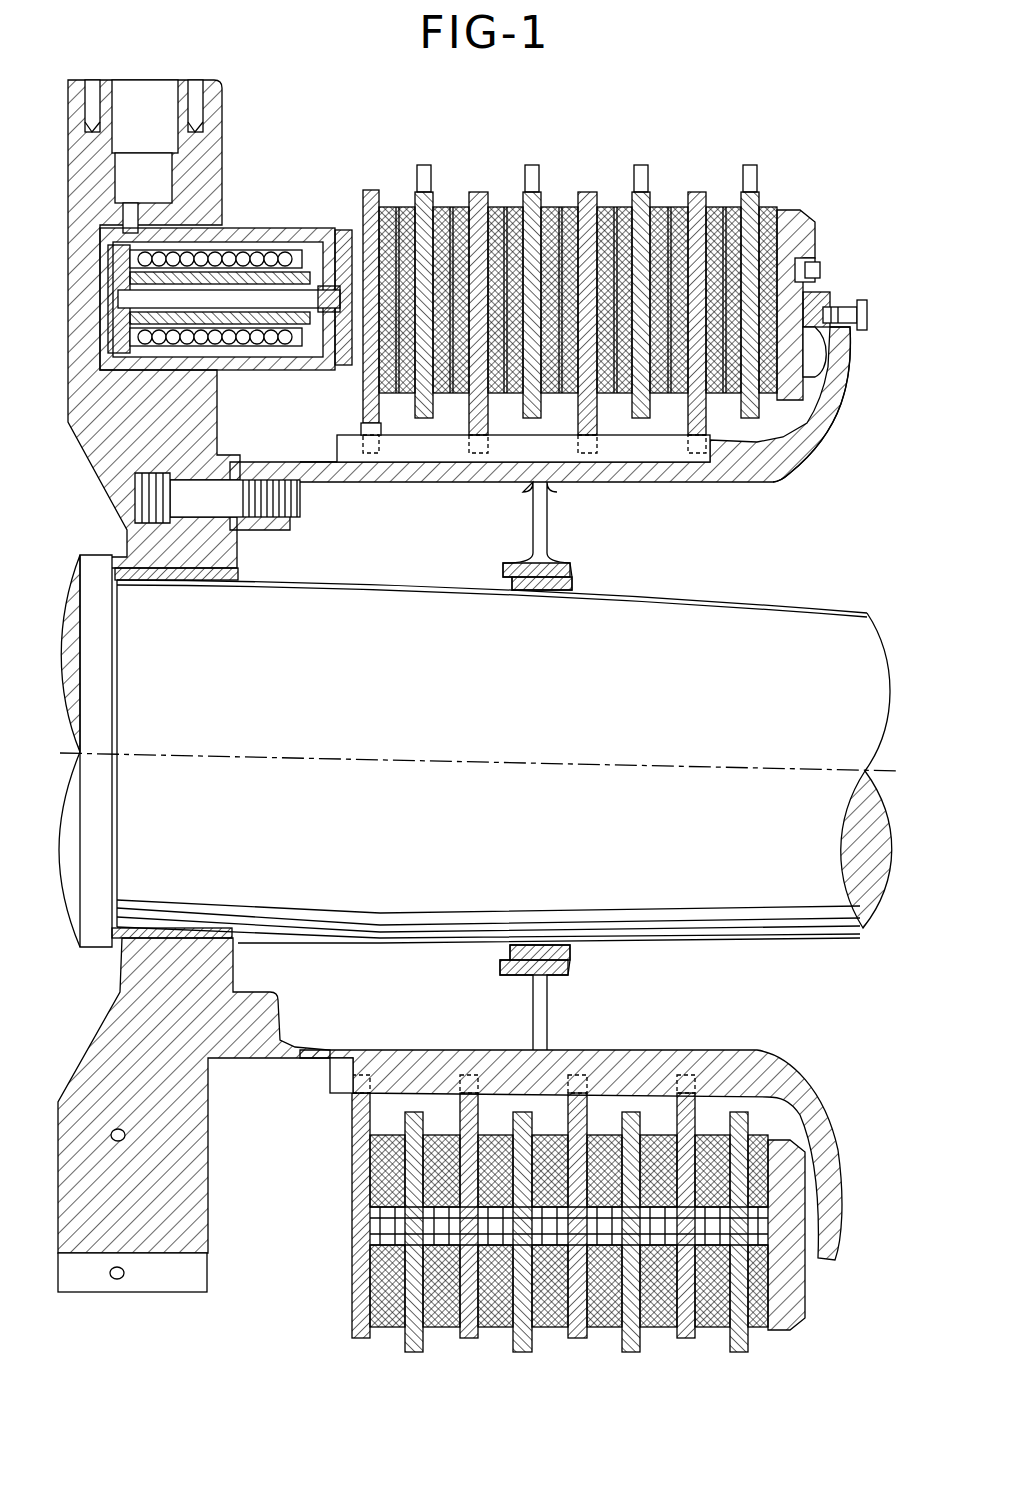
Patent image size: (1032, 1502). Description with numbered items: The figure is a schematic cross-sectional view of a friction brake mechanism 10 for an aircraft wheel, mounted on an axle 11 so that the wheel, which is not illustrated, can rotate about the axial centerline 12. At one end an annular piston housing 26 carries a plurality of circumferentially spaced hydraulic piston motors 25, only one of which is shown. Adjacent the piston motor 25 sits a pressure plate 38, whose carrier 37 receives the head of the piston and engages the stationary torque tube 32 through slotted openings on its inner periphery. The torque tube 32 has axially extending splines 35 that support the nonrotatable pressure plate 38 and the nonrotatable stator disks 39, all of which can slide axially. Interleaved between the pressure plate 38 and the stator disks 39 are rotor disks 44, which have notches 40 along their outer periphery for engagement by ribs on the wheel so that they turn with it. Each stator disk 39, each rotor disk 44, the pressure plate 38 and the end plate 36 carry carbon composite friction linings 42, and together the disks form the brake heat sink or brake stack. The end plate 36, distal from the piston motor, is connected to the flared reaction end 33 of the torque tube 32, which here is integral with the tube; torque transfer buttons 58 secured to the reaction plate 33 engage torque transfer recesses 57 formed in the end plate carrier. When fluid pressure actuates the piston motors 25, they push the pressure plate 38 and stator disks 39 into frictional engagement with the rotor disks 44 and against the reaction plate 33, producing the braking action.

The friction brake mechanism 10 is at (686, 80).
The axle 11 is at (745, 602).
The axial centerline 12 is at (555, 760).
The hydraulic piston motor 25 is at (265, 258).
The annular piston housing 26 is at (215, 82).
The torque tube 32 is at (703, 484).
The reaction plate 33 is at (832, 445).
The splines 35 is at (630, 458).
The end plate 36 is at (800, 210).
The pressure plate carrier 37 is at (362, 412).
The pressure plate 38 is at (370, 192).
The stator disks 39 is at (478, 190).
The notches 40 is at (480, 430).
The friction lining 42 is at (397, 207).
The rotor disks 44 is at (426, 165).
The torque transfer recesses 57 is at (808, 300).
The torque transfer buttons 58 is at (815, 270).